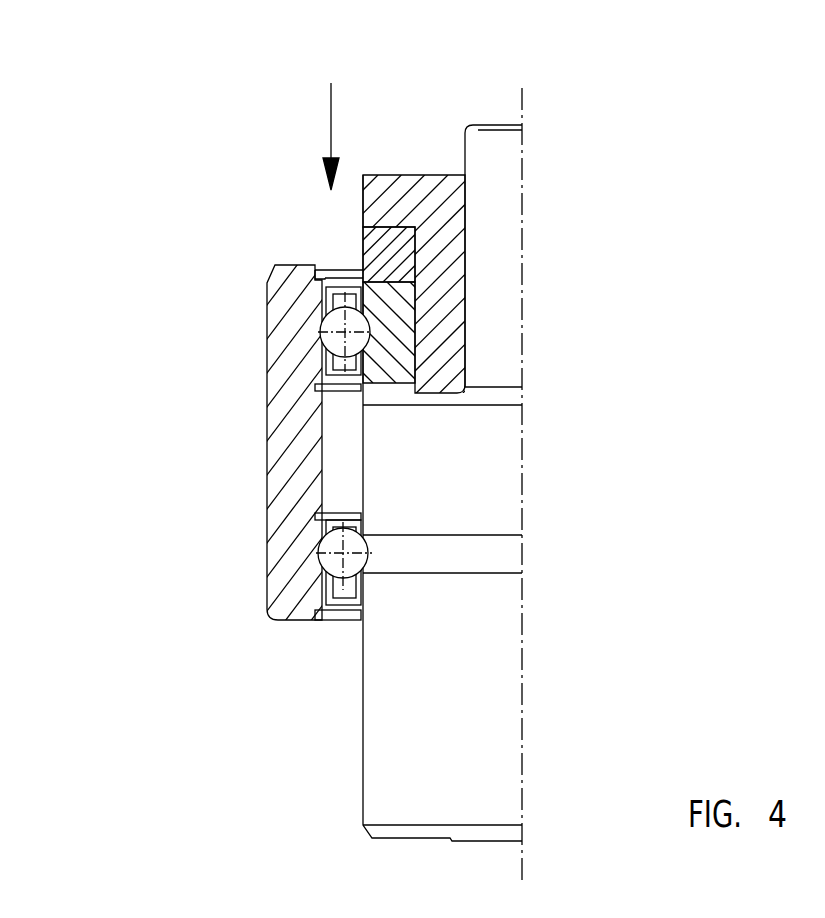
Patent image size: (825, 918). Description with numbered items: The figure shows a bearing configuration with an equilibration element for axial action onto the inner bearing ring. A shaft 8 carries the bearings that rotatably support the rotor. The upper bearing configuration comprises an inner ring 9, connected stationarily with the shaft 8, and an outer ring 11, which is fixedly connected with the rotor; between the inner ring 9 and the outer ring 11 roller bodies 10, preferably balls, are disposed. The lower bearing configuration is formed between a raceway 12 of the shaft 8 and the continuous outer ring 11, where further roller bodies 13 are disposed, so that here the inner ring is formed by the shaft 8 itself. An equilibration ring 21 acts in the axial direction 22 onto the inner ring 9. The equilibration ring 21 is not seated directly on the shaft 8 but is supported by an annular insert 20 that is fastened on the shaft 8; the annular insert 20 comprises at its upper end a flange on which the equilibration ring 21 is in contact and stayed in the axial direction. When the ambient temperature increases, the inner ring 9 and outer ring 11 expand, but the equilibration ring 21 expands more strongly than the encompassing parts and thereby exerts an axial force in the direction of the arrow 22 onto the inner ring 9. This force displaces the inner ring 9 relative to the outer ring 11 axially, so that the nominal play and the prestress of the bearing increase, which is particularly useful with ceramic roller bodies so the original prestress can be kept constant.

The shaft 8 is at (317, 483).
The inner ring 9 is at (385, 357).
The roller bodies 10 is at (333, 325).
The outer ring 11 is at (292, 473).
The raceway 12 is at (430, 557).
The further roller bodies 13 is at (338, 548).
The annular insert 20 is at (422, 200).
The equilibration ring 21 is at (390, 253).
The axial direction 22 is at (331, 121).